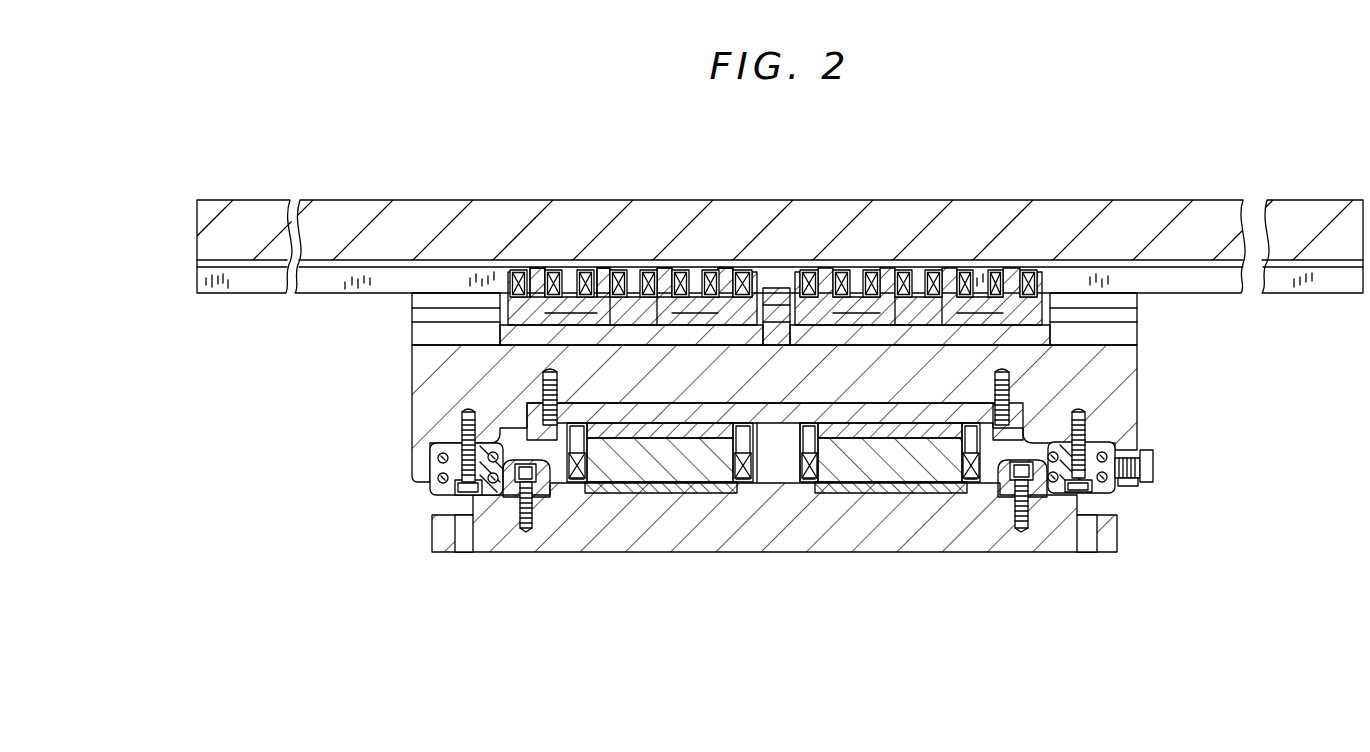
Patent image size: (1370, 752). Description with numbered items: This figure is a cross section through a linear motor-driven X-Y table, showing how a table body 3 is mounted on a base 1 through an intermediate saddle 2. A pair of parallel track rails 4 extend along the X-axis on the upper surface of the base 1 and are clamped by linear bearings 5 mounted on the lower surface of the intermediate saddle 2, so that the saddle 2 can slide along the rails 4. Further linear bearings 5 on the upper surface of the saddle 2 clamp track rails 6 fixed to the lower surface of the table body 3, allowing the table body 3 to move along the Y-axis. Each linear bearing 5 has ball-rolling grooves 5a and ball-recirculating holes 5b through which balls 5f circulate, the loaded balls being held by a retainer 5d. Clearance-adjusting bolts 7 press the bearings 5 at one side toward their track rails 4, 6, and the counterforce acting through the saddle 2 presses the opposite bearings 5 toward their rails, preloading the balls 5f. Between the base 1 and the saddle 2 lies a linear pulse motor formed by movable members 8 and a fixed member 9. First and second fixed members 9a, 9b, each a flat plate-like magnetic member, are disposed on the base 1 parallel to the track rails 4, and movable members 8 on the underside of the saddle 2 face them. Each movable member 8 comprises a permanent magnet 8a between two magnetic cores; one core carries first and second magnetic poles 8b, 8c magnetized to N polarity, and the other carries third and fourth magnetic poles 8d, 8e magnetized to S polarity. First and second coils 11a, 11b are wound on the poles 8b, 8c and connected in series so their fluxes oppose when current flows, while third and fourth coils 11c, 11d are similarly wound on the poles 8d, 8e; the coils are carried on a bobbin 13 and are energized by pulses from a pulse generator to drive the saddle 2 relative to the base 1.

The base 1 is at (855, 552).
The intermediate saddle 2 is at (1138, 387).
The table body 3 is at (1258, 224).
The track rails 4 is at (520, 513).
The linear bearings 5 is at (788, 479).
The ball-rolling grooves 5a is at (462, 450).
The ball-recirculating holes 5b is at (443, 458).
The retainer 5d is at (475, 488).
The balls 5f is at (555, 458).
The track rails 6 is at (1295, 294).
The clearance-adjusting bolts 7 is at (1153, 450).
The movable members 8 is at (800, 344).
The permanent magnet 8a is at (640, 270).
The first magnetic pole 8b is at (538, 268).
The second magnetic pole 8c is at (603, 270).
The third magnetic pole 8d is at (668, 270).
The fourth magnetic pole 8e is at (750, 280).
The fixed member 9 is at (788, 268).
The first fixed member 9a is at (695, 485).
The second fixed member 9b is at (917, 493).
The first coil 11a is at (575, 278).
The second coil 11b is at (585, 268).
The third coil 11c is at (700, 272).
The fourth coil 11d is at (728, 272).
The bobbin 13 is at (498, 335).